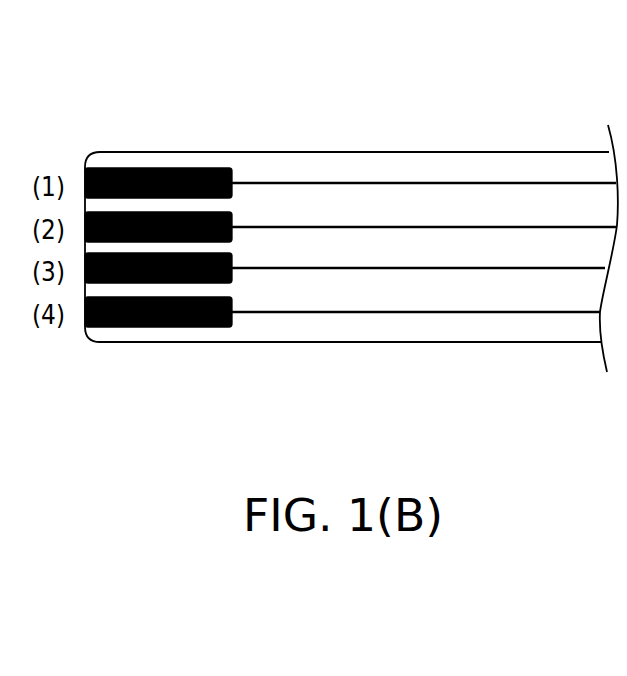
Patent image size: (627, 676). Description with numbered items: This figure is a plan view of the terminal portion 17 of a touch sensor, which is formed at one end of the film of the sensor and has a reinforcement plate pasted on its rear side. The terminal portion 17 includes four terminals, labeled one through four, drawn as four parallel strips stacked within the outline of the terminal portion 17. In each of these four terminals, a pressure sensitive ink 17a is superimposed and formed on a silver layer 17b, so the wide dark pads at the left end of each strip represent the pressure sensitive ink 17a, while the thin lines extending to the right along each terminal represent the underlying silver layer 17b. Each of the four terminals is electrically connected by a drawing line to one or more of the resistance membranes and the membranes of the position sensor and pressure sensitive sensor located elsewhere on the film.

The terminal portion 17 is at (351, 206).
The pressure sensitive ink 17a is at (174, 226).
The silver layer 17b is at (233, 165).